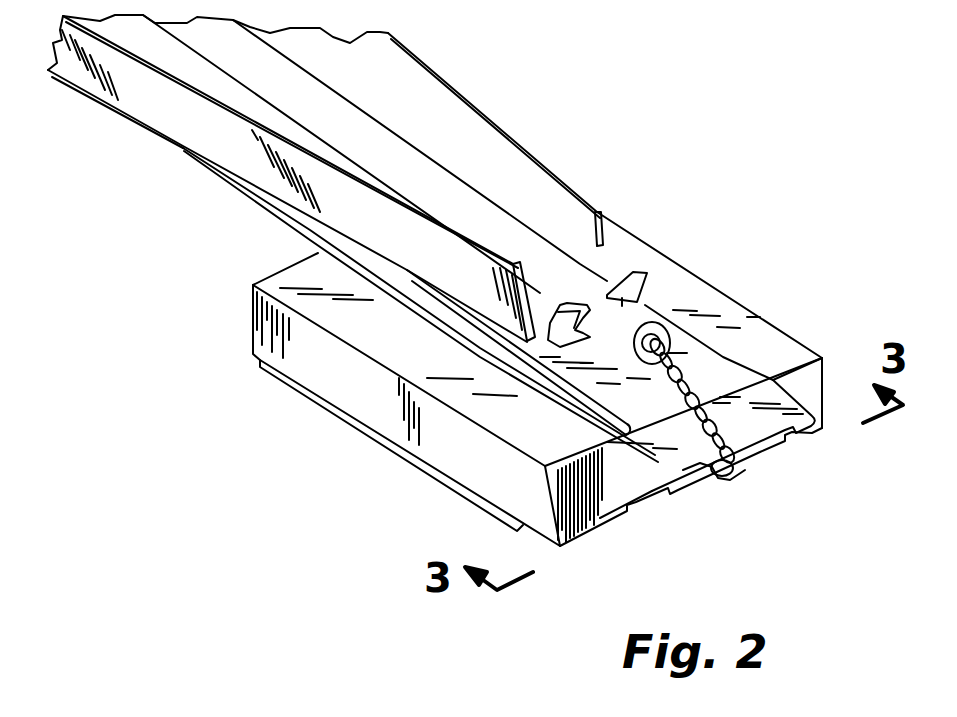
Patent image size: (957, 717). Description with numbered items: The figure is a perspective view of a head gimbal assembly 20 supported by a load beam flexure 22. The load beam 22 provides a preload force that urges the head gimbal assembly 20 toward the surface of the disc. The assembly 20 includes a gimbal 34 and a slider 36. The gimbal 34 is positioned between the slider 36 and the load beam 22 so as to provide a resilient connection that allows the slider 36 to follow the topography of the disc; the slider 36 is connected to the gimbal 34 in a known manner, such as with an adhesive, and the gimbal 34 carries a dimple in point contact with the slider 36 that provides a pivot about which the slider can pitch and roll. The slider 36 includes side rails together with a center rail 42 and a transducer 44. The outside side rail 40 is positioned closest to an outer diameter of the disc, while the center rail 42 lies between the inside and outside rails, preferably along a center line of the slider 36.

The head gimbal assembly 20 is at (436, 289).
The load beam flexure 22 is at (135, 98).
The gimbal 34 is at (713, 355).
The slider 36 is at (389, 396).
The side rail 40 is at (450, 490).
The center rail 42 is at (733, 468).
The transducer 44 is at (703, 491).